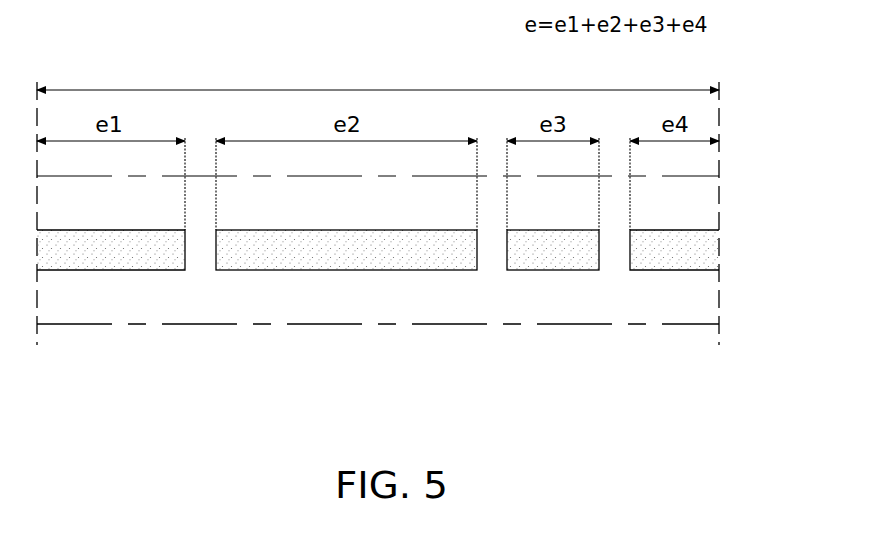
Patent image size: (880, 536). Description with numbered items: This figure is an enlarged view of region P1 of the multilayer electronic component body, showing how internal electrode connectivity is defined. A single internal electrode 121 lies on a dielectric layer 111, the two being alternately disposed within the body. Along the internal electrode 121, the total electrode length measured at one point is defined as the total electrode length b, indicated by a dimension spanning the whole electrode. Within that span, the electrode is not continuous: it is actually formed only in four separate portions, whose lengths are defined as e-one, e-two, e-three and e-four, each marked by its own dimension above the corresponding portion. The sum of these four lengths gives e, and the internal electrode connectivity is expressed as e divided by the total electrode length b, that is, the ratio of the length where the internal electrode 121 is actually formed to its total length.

The internal electrode 121 is at (695, 249).
The dielectric layer 111 is at (695, 298).
The region P1 is at (415, 318).
The total electrode length b is at (378, 75).